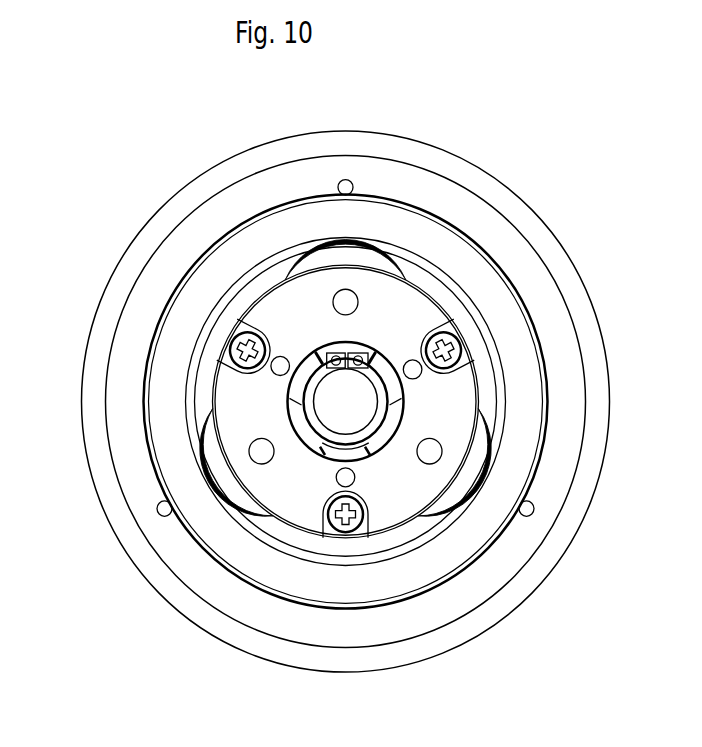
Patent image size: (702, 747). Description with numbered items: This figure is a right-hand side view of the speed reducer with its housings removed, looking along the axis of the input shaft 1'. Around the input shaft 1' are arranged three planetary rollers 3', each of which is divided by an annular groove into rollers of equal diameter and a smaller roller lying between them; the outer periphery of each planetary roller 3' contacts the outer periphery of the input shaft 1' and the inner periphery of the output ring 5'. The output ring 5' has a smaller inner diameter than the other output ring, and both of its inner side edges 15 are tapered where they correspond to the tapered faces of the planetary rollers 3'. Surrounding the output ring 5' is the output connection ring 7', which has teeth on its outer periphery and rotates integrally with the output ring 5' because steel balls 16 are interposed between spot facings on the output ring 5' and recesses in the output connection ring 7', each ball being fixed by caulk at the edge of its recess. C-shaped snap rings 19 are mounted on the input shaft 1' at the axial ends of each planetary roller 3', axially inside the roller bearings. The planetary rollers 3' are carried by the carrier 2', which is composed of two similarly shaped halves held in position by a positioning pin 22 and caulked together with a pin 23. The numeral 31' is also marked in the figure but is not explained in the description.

The input shaft 1' is at (299, 519).
The carrier 2' is at (403, 441).
The planetary roller 3' is at (398, 377).
The output ring 5' is at (323, 357).
The output connection ring 7' is at (346, 379).
The inner side edges 15 is at (277, 258).
The steel balls 16 is at (350, 186).
The C-shaped snap rings 19 is at (364, 440).
The positioning pin 22 is at (414, 370).
The pin 23 is at (238, 350).
The holes 31' is at (362, 343).